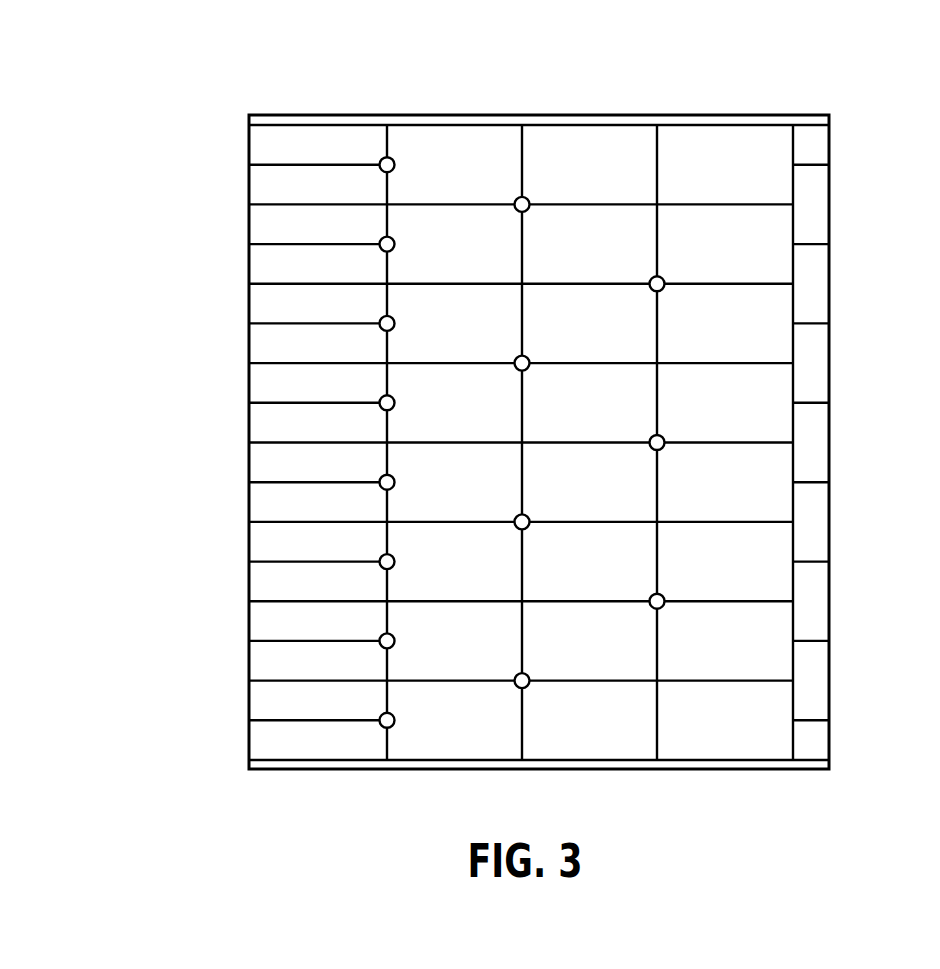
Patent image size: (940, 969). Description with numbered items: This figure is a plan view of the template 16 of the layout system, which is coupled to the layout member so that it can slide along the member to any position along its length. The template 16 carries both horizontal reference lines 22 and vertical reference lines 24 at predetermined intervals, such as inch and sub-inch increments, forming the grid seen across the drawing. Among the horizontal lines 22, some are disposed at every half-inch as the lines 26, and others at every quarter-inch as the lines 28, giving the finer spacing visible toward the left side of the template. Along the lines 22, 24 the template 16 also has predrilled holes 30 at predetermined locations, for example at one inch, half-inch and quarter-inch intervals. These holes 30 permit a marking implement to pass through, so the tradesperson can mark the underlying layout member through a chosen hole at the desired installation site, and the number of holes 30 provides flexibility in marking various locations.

The template 16 is at (212, 651).
The horizontal reference lines 22 is at (443, 283).
The vertical reference lines 24 is at (524, 153).
The half-inch lines 26 is at (342, 362).
The quarter-inch lines 28 is at (317, 243).
The holes 30 is at (381, 160).